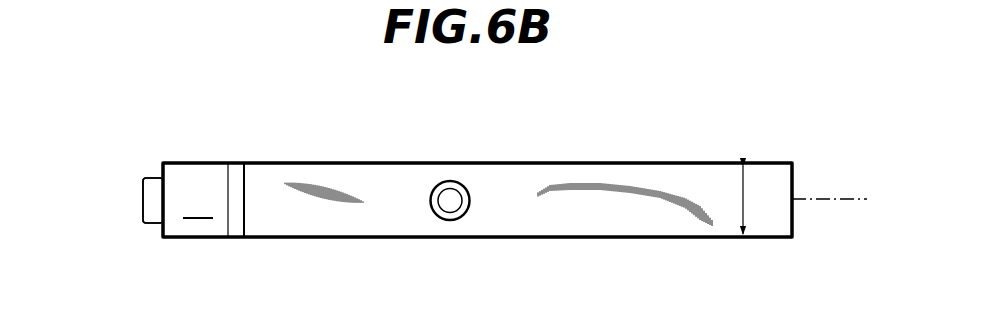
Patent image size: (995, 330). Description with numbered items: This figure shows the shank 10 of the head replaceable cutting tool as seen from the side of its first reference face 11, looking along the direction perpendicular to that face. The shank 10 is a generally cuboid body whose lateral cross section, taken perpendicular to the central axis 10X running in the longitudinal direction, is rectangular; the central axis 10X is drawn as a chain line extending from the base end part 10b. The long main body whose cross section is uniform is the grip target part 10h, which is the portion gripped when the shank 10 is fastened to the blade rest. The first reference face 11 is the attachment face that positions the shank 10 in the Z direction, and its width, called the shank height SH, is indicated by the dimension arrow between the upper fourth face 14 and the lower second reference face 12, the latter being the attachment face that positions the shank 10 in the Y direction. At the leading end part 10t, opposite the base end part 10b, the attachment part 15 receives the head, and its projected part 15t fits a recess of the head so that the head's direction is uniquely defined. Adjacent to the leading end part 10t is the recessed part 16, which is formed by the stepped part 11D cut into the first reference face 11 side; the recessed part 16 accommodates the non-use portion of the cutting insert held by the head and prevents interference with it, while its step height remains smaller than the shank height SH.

The shank 10 is at (123, 130).
The leading end part 10t is at (182, 133).
The base end part 10b is at (765, 143).
The grip target part 10h is at (487, 183).
The central axis 10X is at (850, 200).
The first reference face 11 is at (510, 202).
The stepped part 11D is at (232, 242).
The second reference face 12 is at (410, 242).
The fourth face 14 is at (382, 162).
The attachment part 15 is at (147, 233).
The projected part 15t is at (152, 200).
The recessed part 16 is at (198, 200).
The shank height SH is at (741, 200).